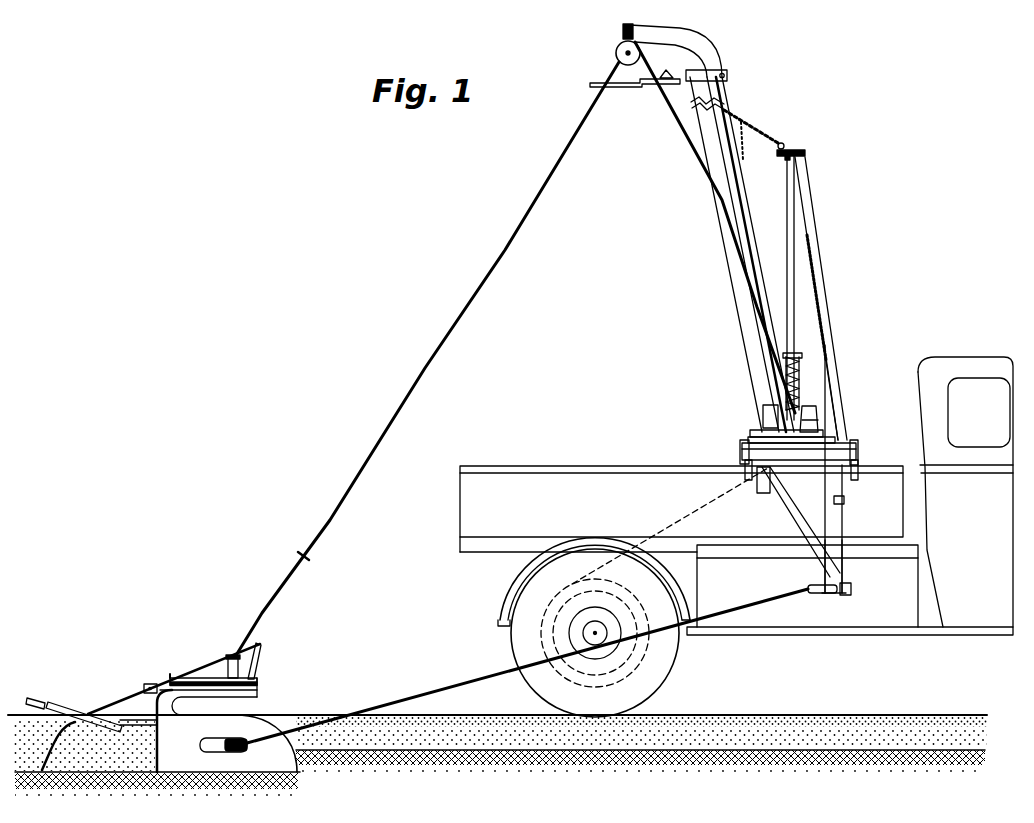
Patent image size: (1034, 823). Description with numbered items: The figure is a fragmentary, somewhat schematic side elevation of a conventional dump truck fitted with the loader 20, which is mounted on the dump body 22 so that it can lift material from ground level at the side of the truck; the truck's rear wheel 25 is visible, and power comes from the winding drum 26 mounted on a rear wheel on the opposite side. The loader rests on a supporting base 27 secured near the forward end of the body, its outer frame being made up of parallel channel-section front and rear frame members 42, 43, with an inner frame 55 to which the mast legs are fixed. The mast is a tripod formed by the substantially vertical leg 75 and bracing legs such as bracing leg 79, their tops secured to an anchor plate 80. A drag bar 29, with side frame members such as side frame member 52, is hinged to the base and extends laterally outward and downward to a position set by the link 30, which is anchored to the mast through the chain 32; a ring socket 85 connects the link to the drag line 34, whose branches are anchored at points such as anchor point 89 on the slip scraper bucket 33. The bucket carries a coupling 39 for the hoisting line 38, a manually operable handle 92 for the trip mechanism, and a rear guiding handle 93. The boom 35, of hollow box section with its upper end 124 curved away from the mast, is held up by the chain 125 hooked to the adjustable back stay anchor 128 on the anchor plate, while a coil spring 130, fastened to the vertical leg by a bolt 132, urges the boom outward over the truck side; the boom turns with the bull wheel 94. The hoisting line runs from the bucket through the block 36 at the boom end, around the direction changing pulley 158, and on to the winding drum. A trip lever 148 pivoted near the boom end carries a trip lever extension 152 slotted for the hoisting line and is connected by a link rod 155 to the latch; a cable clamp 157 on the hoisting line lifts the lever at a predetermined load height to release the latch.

The loader 20 is at (823, 234).
The dump body 22 is at (653, 490).
The rear wheel 25 is at (923, 360).
The winding drum 26 is at (640, 655).
The supporting base 27 is at (860, 457).
The drag bar 29 is at (841, 527).
The link 30 is at (844, 500).
The chain 32 is at (819, 290).
The slip scraper bucket 33 is at (262, 772).
The drag line 34 is at (470, 684).
The boom 35 is at (736, 278).
The block 36 is at (616, 62).
The hoisting line 38 is at (695, 157).
The coupling 39 is at (229, 656).
The front frame member 42 is at (860, 452).
The rear frame member 43 is at (744, 451).
The side frame member 52 is at (778, 493).
The inner frame 55 is at (836, 511).
The vertical leg 75 is at (788, 239).
The bracing leg 79 is at (836, 370).
The anchor plate 80 is at (807, 151).
The ring socket 85 is at (815, 591).
The anchor point 89 is at (246, 736).
The manually operable handle 92 is at (58, 743).
The rear guiding handle 93 is at (40, 702).
The bull wheel 94 is at (758, 430).
The upper end of boom 124 is at (666, 42).
The chain 125 is at (748, 123).
The back stay anchor 128 is at (794, 147).
The coil spring 130 is at (791, 372).
The bolt 132 is at (799, 362).
The trip lever 148 is at (704, 72).
The trip lever extension 152 is at (609, 88).
The link rod 155 is at (738, 181).
The cable clamp 157 is at (305, 558).
The direction changing pulley 158 is at (822, 417).